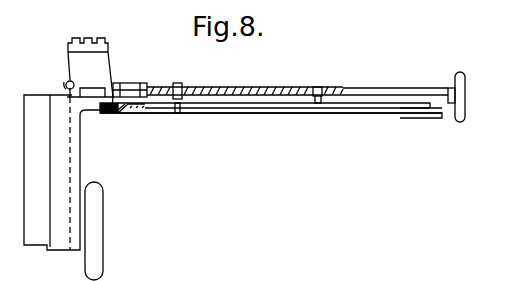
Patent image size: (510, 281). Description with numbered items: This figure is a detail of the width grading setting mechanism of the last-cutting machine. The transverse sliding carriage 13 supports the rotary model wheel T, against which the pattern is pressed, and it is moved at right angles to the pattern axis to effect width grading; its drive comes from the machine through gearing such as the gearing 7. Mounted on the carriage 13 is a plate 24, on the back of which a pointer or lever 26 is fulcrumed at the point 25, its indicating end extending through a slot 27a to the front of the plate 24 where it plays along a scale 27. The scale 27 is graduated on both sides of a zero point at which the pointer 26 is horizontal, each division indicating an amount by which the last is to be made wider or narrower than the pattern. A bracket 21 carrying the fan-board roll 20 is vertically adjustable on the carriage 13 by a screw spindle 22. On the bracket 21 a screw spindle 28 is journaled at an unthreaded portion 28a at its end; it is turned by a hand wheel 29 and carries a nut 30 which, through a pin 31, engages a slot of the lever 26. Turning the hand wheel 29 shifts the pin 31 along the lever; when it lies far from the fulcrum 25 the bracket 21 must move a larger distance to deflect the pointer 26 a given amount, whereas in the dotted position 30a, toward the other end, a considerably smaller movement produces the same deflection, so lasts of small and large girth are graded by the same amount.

The gearing 7 is at (37, 180).
The sliding carriage 13 is at (80, 168).
The model wheel T is at (92, 225).
The roll 20 is at (90, 40).
The bracket 21 is at (103, 63).
The screw spindle 22 is at (65, 82).
The plate 24 is at (287, 112).
The fulcrum point 25 is at (422, 115).
The pointer 26 is at (288, 87).
The scale 27 is at (100, 110).
The slot 27a is at (126, 113).
The screw spindle 28 is at (233, 88).
The unthreaded portion 28a is at (130, 83).
The hand wheel 29 is at (463, 80).
The nut 30 is at (180, 83).
The nut position 30a is at (318, 87).
The pin 31 is at (177, 108).